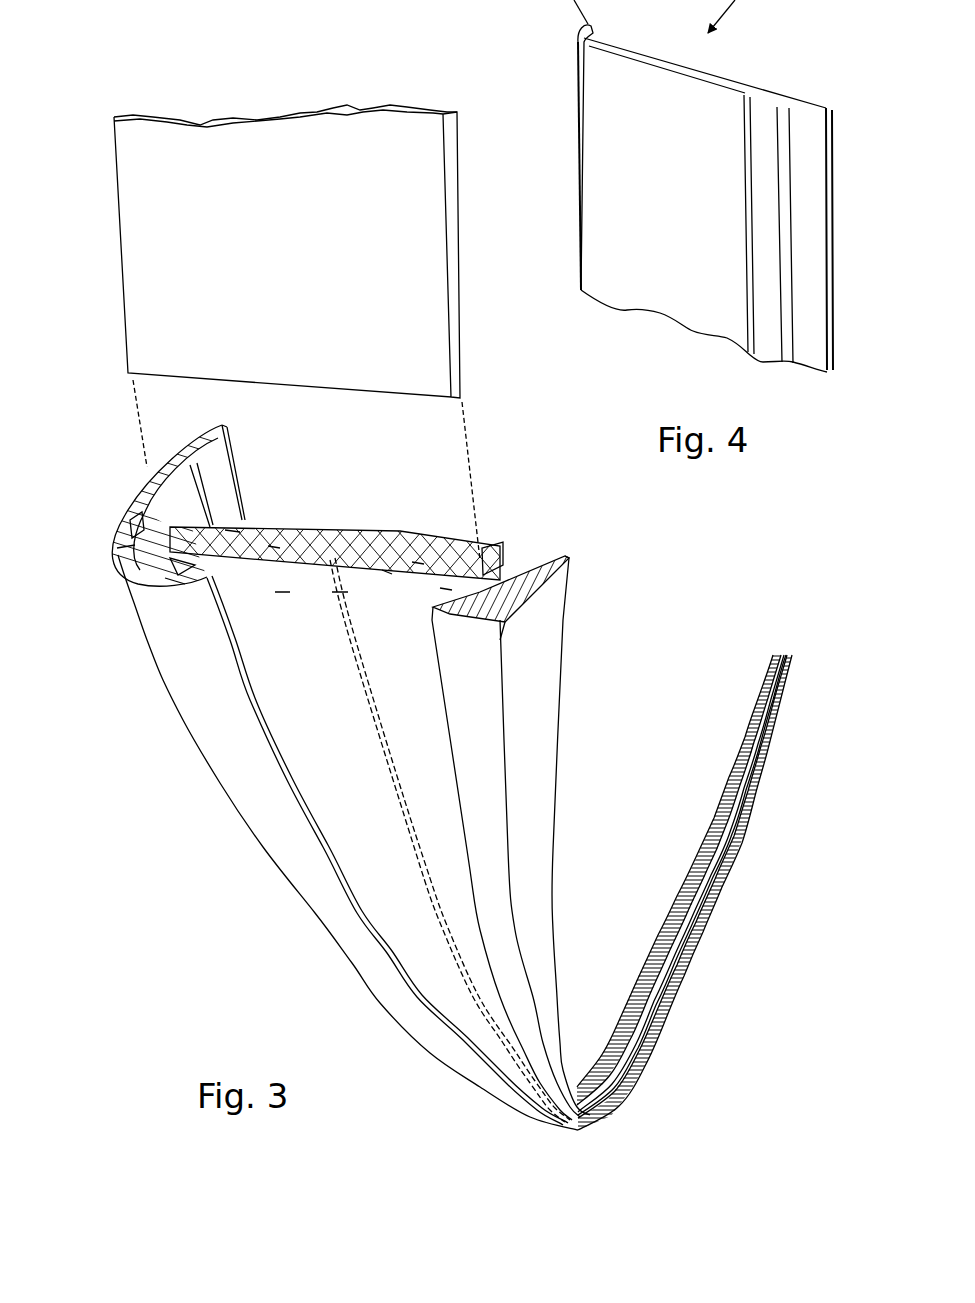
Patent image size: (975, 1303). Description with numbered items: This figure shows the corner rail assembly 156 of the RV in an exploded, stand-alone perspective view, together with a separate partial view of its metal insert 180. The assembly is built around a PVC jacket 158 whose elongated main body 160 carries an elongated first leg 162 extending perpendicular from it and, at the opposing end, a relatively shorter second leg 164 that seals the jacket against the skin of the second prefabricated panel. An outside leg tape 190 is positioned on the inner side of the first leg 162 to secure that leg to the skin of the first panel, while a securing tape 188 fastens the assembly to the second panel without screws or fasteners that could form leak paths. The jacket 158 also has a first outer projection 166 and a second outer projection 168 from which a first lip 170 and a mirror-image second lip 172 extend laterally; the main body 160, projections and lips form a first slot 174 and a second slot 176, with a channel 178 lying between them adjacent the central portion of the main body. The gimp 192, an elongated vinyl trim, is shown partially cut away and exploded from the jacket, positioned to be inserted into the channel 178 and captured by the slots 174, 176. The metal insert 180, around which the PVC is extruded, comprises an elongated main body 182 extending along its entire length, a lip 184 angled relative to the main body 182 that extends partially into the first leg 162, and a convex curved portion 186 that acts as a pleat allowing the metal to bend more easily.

In FIG. 3, the corner rail assembly 156 is at (592, 604).
In FIG. 3, the jacket 158 is at (230, 533).
In FIG. 3, the main body 160 is at (490, 552).
In FIG. 3, the first leg 162 is at (137, 498).
In FIG. 3, the second leg 164 is at (567, 557).
In FIG. 3, the first outer projection 166 is at (515, 600).
In FIG. 3, the second outer projection 168 is at (117, 550).
In FIG. 3, the first lip 170 is at (447, 613).
In FIG. 3, the second lip 172 is at (173, 582).
In FIG. 3, the first slot 174 is at (452, 590).
In FIG. 3, the second slot 176 is at (200, 562).
In FIG. 3, the channel 178 is at (330, 603).
In FIG. 3, the metal insert 180 is at (271, 547).
In FIG. 3, the main body 182 is at (418, 563).
In FIG. 4, the main body 182 is at (655, 282).
In FIG. 3, the lip 184 is at (137, 520).
In FIG. 3, the curved portion 186 is at (386, 572).
In FIG. 4, the curved portion 186 is at (765, 120).
In FIG. 3, the securing tape 188 is at (333, 533).
In FIG. 3, the outside leg tape 190 is at (222, 458).
In FIG. 3, the gimp 192 is at (288, 142).